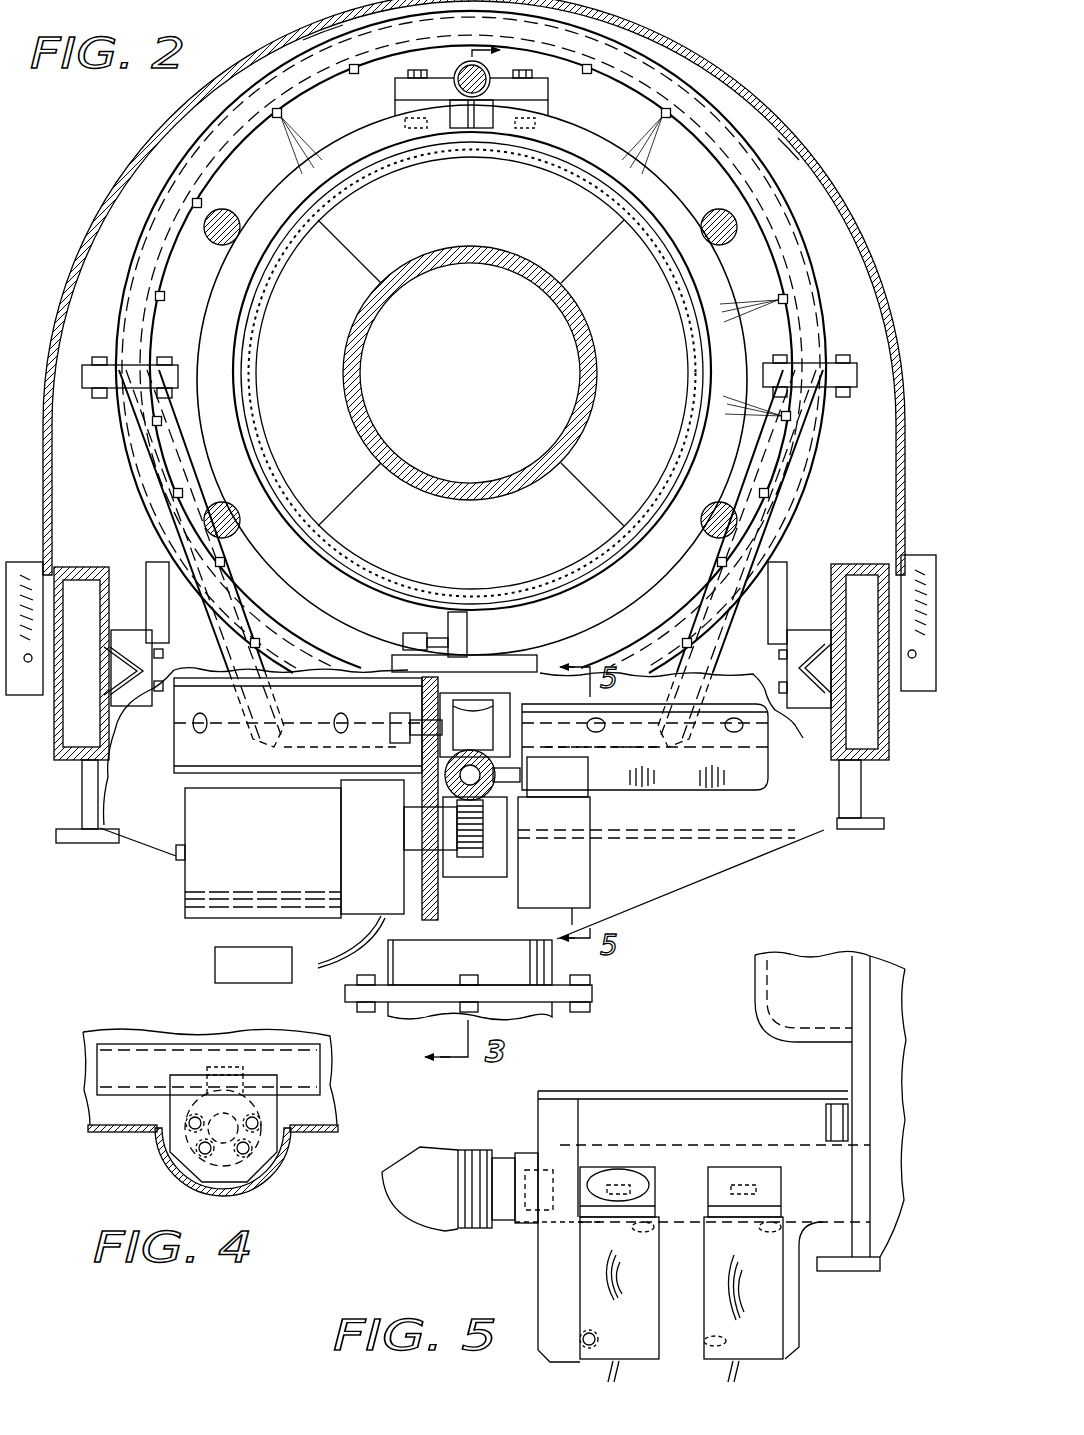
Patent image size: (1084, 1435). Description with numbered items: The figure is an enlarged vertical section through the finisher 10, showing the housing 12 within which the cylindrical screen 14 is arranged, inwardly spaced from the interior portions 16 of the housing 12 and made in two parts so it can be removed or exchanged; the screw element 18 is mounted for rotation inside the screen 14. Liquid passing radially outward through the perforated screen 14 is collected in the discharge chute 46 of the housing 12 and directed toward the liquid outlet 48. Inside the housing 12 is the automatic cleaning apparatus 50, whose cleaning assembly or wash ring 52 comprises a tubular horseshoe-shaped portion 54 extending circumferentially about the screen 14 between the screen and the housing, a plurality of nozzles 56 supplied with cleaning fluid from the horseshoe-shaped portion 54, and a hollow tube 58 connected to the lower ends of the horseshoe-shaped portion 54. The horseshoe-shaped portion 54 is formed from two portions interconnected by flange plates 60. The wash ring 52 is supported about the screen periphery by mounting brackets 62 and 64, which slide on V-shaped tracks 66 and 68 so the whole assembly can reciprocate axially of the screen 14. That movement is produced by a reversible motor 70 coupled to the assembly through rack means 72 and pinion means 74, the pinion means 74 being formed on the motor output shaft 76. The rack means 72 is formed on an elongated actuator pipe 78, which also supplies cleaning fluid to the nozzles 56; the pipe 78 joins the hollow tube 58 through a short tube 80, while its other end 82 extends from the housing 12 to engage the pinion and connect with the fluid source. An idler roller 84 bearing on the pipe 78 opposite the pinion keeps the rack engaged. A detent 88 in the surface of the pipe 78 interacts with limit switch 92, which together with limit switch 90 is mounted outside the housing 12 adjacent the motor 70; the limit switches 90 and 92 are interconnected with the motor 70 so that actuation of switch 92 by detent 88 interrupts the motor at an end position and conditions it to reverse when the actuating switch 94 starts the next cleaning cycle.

In FIG. 2, the finisher 10 is at (780, 70).
In FIG. 2, the housing 12 is at (704, 66).
In FIG. 4, the housing 12 is at (160, 1173).
In FIG. 2, the cylindrical screen 14 is at (646, 235).
In FIG. 2, the interior portions 16 is at (781, 142).
In FIG. 2, the screw element 18 is at (470, 346).
In FIG. 2, the discharge chute 46 is at (738, 863).
In FIG. 2, the liquid outlet 48 is at (518, 1012).
In FIG. 2, the automatic cleaning apparatus 50 is at (208, 148).
In FIG. 2, the cleaning assembly or wash ring 52 is at (325, 46).
In FIG. 2, the tubular horseshoe-shaped portion 54 is at (163, 182).
In FIG. 2, the nozzles 56 is at (355, 74).
In FIG. 2, the hollow tube 58 is at (666, 749).
In FIG. 4, the hollow tube 58 is at (145, 1044).
In FIG. 2, the flange plates 60 is at (90, 386).
In FIG. 2, the mounting bracket 62 is at (122, 628).
In FIG. 2, the mounting bracket 64 is at (805, 628).
In FIG. 2, the V-shaped track 66 is at (124, 690).
In FIG. 2, the V-shaped track 68 is at (811, 690).
In FIG. 2, the reversible motor 70 is at (290, 874).
In FIG. 2, the rack means 72 is at (440, 806).
In FIG. 2, the pinion means 74 is at (470, 856).
In FIG. 2, the output shaft 76 is at (441, 800).
In FIG. 2, the elongated actuator pipe or tube 78 is at (456, 780).
In FIG. 4, the elongated actuator pipe or tube 78 is at (262, 1147).
In FIG. 5, the elongated actuator pipe or tube 78 is at (530, 1152).
In FIG. 4, the short tube 80 is at (207, 1112).
In FIG. 5, the other end of the pipe 82 is at (483, 1228).
In FIG. 2, the idler roller 84 is at (419, 700).
In FIG. 5, the detent 88 is at (618, 1170).
In FIG. 5, the limit or microswitch 90 is at (770, 1314).
In FIG. 2, the limit or microswitch 92 is at (590, 867).
In FIG. 5, the limit or microswitch 92 is at (578, 1279).
In FIG. 2, the actuating switch 94 is at (223, 960).